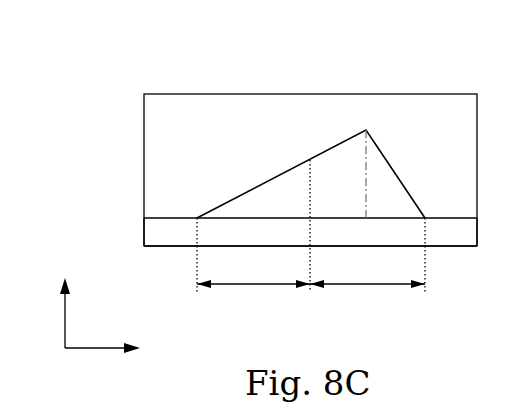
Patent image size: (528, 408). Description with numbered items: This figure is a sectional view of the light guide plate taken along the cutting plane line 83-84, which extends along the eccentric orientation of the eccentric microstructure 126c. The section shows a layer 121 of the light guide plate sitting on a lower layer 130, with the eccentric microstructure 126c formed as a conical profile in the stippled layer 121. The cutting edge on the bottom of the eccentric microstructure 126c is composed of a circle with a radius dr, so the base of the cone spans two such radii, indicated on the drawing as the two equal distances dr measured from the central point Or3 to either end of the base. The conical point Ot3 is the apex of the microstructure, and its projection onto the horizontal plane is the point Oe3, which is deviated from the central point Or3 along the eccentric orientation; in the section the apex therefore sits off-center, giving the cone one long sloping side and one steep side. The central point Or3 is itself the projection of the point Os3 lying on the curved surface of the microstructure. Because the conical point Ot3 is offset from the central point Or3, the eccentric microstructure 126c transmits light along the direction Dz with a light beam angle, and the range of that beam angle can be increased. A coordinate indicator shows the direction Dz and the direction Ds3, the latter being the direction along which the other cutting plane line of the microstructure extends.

The substrate / body layer 121 is at (155, 193).
The bottom layer 130 is at (155, 238).
The eccentric microstructure 126c is at (188, 158).
The point of the curved surface SURB Os3 is at (312, 158).
The conical point Ot3 is at (366, 130).
The central point Or3 is at (310, 219).
The projection of the conical point Oe3 is at (366, 219).
The radius dr is at (311, 297).
The cutting plane line 83-84 is at (502, 287).
The direction Dz is at (61, 299).
The direction Ds3 is at (125, 349).